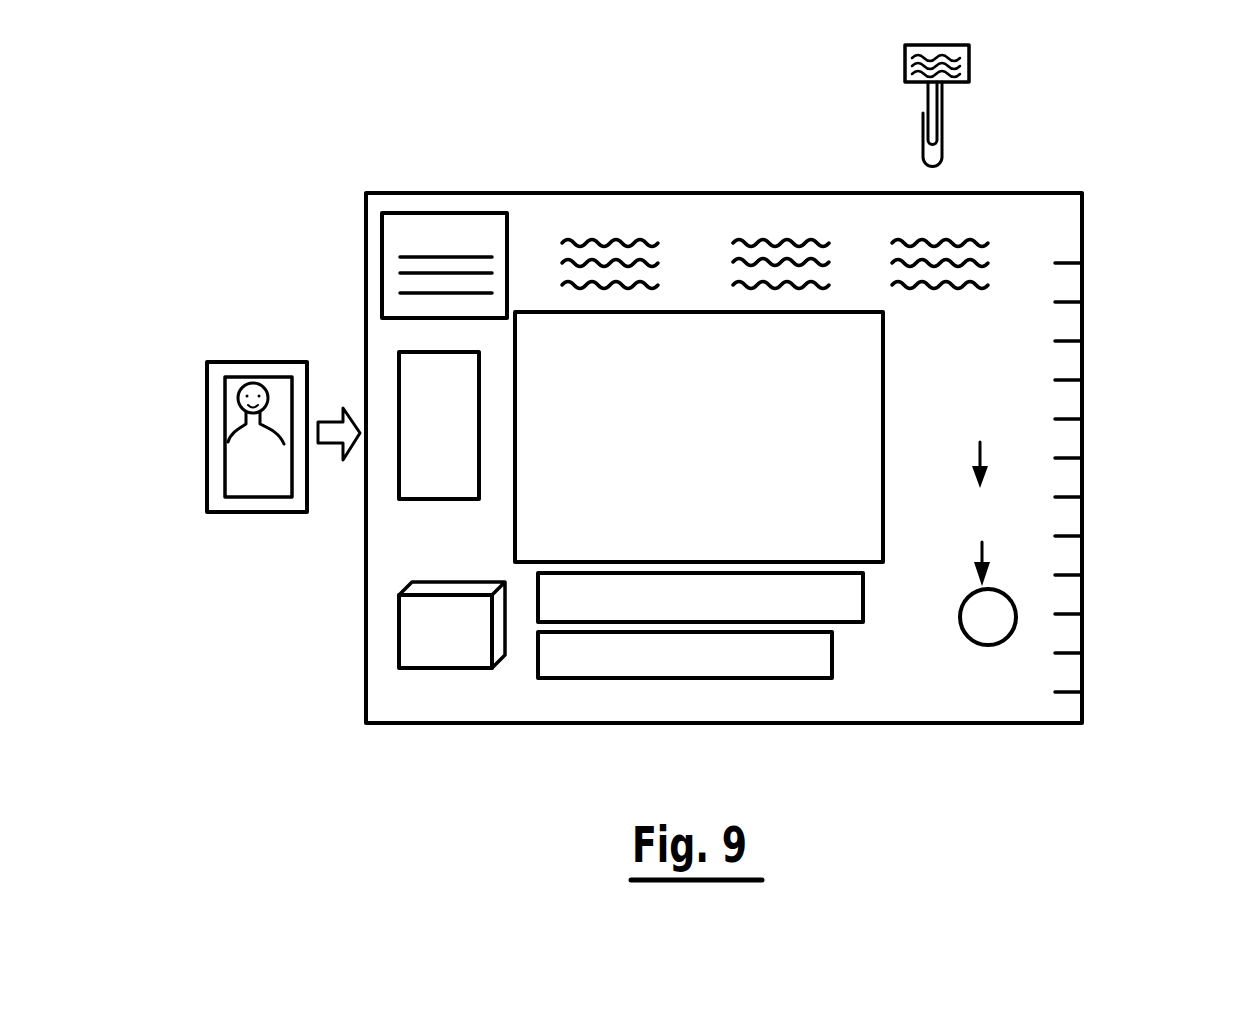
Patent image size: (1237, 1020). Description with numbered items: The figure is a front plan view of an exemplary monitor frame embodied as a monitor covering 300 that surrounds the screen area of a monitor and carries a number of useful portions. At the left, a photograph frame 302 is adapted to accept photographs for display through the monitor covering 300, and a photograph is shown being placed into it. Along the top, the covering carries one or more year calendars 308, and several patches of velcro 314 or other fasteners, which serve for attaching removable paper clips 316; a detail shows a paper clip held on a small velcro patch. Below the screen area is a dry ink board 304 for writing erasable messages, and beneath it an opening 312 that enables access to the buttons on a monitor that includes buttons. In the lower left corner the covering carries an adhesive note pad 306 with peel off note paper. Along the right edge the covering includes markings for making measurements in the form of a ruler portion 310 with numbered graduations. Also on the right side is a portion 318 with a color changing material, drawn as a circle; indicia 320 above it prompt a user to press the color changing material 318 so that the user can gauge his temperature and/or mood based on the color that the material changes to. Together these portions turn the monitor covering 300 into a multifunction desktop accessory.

The monitor covering 300 is at (565, 193).
The photograph frame 302 is at (388, 362).
The dry ink board 304 is at (846, 622).
The adhesive note pad 306 is at (397, 646).
The year calendar 308 is at (410, 213).
The ruler portion 310 is at (1088, 228).
The openings 312 is at (606, 676).
The velcro 314 is at (749, 237).
The paper clips 316 is at (803, 214).
The portion with color changing material 318 is at (984, 640).
The indicia 320 is at (978, 492).